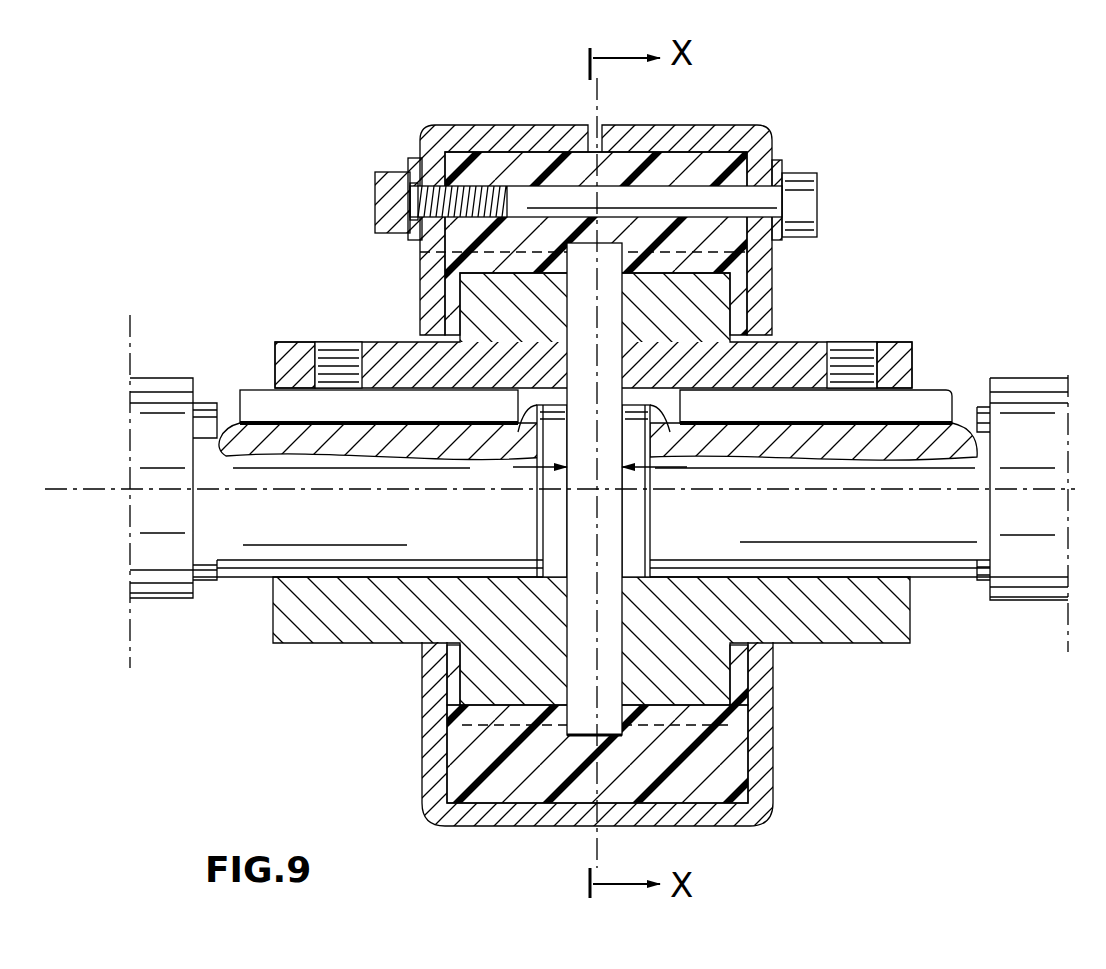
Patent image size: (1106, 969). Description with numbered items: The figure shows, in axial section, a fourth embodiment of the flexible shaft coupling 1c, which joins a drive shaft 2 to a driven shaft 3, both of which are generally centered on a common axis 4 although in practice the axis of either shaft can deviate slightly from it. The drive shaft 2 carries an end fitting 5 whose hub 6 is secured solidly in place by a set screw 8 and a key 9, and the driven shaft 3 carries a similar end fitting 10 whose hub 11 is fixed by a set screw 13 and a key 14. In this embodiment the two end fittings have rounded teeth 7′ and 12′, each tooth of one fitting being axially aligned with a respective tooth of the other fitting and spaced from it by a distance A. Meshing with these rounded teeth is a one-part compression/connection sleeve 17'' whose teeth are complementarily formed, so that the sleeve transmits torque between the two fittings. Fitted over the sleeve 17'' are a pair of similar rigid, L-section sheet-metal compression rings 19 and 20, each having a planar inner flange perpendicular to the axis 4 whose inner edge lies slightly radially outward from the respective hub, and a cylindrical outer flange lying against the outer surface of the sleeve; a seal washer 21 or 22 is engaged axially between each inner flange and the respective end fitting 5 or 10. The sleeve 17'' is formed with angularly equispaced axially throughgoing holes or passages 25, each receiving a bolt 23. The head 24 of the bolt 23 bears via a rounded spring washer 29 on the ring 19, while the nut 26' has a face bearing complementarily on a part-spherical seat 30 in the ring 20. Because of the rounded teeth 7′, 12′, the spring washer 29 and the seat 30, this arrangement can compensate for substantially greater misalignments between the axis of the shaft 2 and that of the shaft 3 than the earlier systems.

The coupling 1c is at (780, 782).
The drive shaft 2 is at (953, 552).
The driven shaft 3 is at (240, 552).
The common axis 4 is at (72, 495).
The end fitting 5 is at (892, 645).
The hub 6 is at (898, 370).
The rounded teeth 7′ is at (775, 262).
The set screw 8 is at (862, 353).
The key 9 is at (933, 398).
The end fitting 10 is at (300, 645).
The hub 11 is at (290, 371).
The rounded teeth 12′ is at (420, 253).
The set screw 13 is at (305, 343).
The key 14 is at (257, 407).
The one-part compression/connection sleeve 17'' is at (564, 792).
The compression ring 19 is at (762, 737).
The compression ring 20 is at (432, 742).
The seal washer 21 is at (750, 668).
The seal washer 22 is at (437, 667).
The bolt 23 is at (693, 197).
The head 24 is at (800, 200).
The holes or passages 25 is at (546, 196).
The nut 26' is at (352, 200).
The rounded spring washer 29 is at (773, 162).
The part-spherical seat 30 is at (436, 162).
The distance A is at (590, 494).